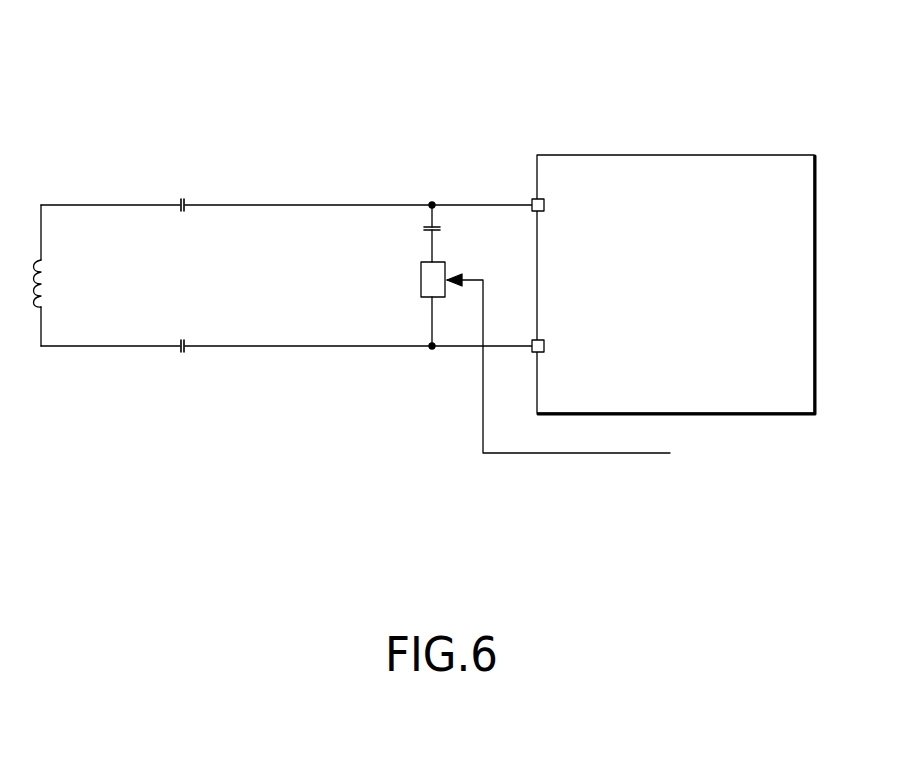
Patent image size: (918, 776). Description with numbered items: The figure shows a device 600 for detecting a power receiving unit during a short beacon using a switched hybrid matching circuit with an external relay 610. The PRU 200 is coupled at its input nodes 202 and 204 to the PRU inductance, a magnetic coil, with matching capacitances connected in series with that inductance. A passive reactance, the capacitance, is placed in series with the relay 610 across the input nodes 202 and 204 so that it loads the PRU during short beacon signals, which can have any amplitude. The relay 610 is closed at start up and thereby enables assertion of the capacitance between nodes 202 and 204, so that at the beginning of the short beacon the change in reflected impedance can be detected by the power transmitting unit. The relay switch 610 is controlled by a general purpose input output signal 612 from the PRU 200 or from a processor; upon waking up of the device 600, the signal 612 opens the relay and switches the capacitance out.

The device 600 is at (130, 100).
The PRU 200 is at (676, 284).
The input node 202 is at (545, 205).
The input node 204 is at (545, 346).
The relay 610 is at (421, 288).
The GPIO signal 612 is at (593, 453).